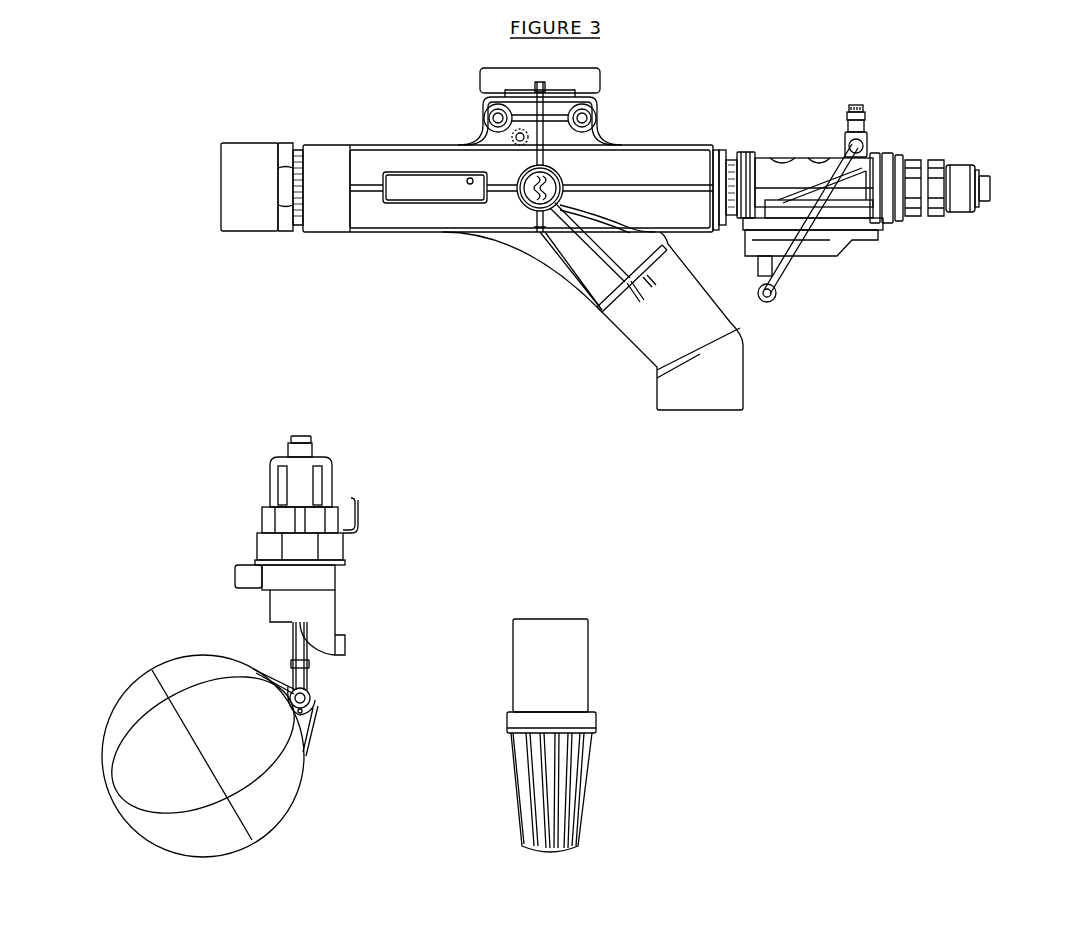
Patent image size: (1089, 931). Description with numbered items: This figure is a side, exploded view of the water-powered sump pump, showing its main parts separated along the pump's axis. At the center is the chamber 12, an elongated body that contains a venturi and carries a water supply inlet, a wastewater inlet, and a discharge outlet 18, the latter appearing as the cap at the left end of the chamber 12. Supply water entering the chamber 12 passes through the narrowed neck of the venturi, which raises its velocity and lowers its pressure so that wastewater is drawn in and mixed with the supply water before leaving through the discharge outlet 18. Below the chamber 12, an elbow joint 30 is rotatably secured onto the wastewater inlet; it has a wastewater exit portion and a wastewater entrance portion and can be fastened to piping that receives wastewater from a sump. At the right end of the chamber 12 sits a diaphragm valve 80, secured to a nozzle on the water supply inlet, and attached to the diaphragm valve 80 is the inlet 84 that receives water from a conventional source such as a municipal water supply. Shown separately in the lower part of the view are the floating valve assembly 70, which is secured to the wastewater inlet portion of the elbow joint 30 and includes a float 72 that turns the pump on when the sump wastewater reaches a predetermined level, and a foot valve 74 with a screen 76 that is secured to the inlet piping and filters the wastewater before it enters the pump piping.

The chamber 12 is at (437, 237).
The discharge outlet 18 is at (255, 234).
The elbow joint 30 is at (625, 340).
The floating valve assembly 70 is at (348, 573).
The float 72 is at (172, 652).
The foot valve 74 is at (598, 663).
The screen 76 is at (592, 793).
The diaphragm valve 80 is at (815, 149).
The inlet 84 is at (996, 184).